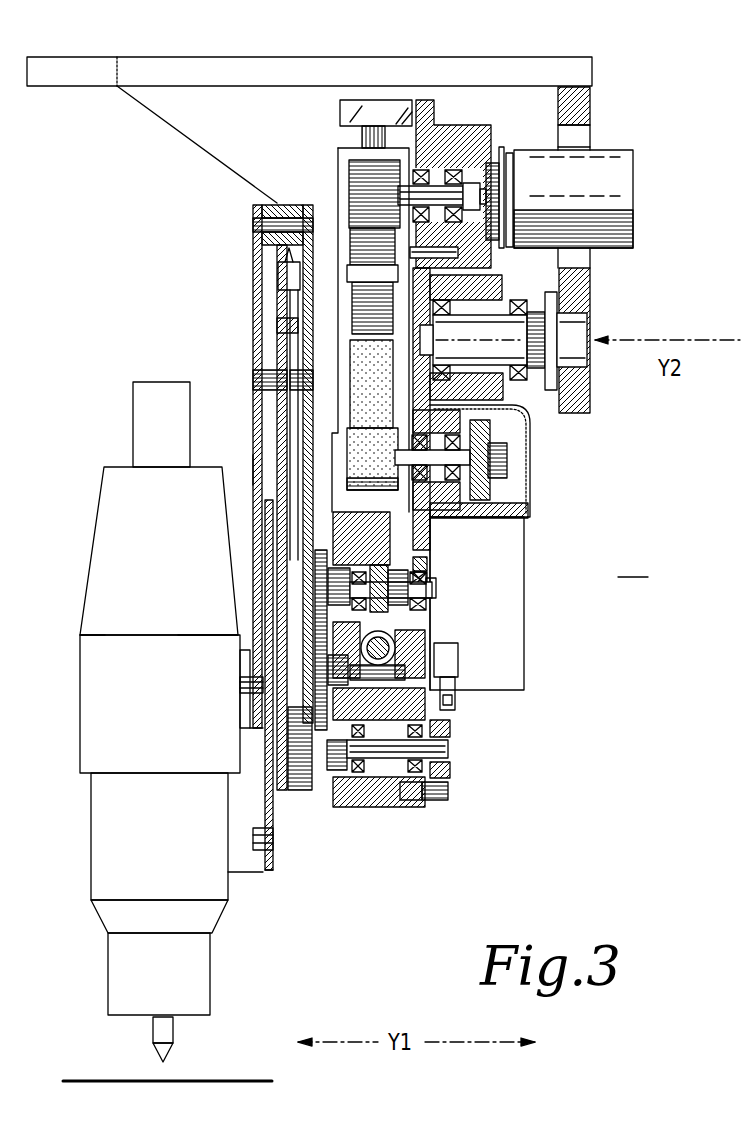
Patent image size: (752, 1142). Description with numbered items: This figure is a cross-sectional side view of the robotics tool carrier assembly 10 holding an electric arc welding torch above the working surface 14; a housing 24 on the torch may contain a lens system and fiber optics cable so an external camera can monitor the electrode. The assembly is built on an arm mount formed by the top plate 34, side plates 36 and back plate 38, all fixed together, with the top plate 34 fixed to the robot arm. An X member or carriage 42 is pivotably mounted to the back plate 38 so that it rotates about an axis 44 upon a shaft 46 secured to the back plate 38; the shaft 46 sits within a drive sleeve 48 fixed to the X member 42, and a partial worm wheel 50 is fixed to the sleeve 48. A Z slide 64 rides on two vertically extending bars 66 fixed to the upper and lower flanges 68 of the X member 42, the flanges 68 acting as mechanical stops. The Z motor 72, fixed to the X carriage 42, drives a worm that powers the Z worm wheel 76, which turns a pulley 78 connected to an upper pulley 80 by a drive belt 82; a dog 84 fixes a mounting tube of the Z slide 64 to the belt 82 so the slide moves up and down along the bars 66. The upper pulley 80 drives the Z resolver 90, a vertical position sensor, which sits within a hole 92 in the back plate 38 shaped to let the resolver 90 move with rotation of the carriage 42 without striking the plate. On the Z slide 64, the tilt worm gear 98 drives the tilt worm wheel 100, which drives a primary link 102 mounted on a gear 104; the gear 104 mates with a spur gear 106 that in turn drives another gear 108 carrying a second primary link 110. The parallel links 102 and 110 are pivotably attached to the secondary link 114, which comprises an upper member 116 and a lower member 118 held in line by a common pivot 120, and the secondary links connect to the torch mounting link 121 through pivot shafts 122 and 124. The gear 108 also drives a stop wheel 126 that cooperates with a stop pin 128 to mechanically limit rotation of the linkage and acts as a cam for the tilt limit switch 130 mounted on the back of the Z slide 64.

The robotics tool carrier assembly 10 is at (633, 564).
The working surface 14 is at (85, 1081).
The housing 24 is at (80, 705).
The arm mount top plate 34 is at (82, 58).
The arm mount side plates 36 is at (178, 130).
The arm mount back plate 38 is at (588, 108).
The X member 42 is at (338, 108).
The axis 44 is at (650, 338).
The shaft 46 is at (530, 312).
The drive sleeve 48 is at (512, 408).
The partial worm wheel 50 is at (507, 387).
The Z slide 64 is at (388, 808).
The vertical extending bars 66 is at (358, 133).
The upper and lower flanges 68 is at (388, 100).
The Z motor 72 is at (524, 653).
The Z worm wheel 76 is at (490, 492).
The pulley 78 is at (430, 540).
The pulley 80 is at (358, 190).
The drive belt 82 is at (348, 277).
The dog 84 is at (350, 290).
The Z resolver 90 is at (625, 183).
The hole 92 is at (592, 135).
The tilt worm gear 98 is at (418, 640).
The tilt worm wheel 100 is at (425, 570).
The primary link 102 is at (310, 208).
The gear 104 is at (320, 592).
The spur gear 106 is at (240, 650).
The gear 108 is at (318, 793).
The primary link 110 is at (262, 440).
The secondary link 114 is at (267, 876).
The upper member 116 is at (253, 470).
The lower member 118 is at (255, 565).
The common pivot 120 is at (255, 530).
The torch mounting link 121 is at (235, 808).
The pivot shaft 122 is at (243, 685).
The pivot shaft 124 is at (255, 838).
The stop wheel 126 is at (452, 738).
The stop pin 128 is at (440, 805).
The tilt limit switch 130 is at (457, 660).